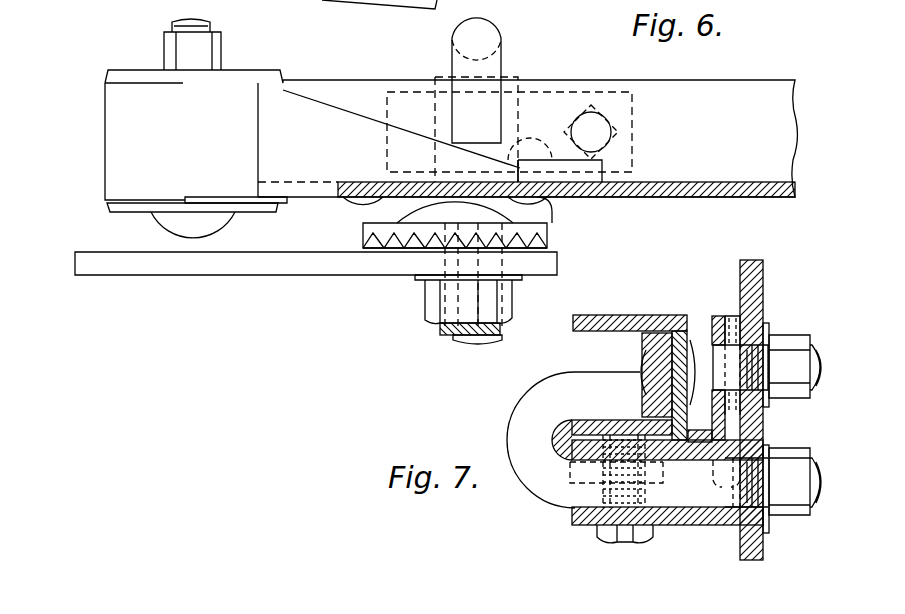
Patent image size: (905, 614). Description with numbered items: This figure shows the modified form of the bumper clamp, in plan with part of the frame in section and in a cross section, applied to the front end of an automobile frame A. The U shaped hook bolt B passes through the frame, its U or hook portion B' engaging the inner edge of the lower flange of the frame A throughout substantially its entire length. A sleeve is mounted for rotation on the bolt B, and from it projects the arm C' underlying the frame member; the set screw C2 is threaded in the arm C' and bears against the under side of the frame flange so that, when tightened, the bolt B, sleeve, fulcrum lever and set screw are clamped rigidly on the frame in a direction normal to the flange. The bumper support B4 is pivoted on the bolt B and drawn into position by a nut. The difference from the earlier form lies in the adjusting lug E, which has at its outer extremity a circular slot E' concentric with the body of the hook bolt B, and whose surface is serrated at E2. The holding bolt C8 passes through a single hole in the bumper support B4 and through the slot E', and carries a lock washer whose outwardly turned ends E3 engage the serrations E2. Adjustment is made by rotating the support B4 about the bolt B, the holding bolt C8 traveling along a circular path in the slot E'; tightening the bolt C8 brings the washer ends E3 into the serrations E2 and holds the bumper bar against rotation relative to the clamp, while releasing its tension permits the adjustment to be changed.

In FIG. 6, the front end of automobile frame A is at (795, 145).
In FIG. 7, the front end of automobile frame A is at (613, 315).
In FIG. 6, the U shaped hook bolt B is at (468, 331).
In FIG. 7, the U shaped hook bolt B is at (776, 428).
In FIG. 6, the U or hook portion B' is at (501, 80).
In FIG. 7, the U or hook portion B' is at (635, 448).
In FIG. 6, the bumper support B4 is at (257, 268).
In FIG. 7, the bumper support B4 is at (763, 278).
In FIG. 6, the arm C' is at (540, 132).
In FIG. 7, the arm C' is at (549, 510).
In FIG. 6, the set screw C2 is at (632, 115).
In FIG. 7, the set screw C2 is at (612, 533).
In FIG. 6, the holding bolt C8 is at (445, 327).
In FIG. 7, the holding bolt C8 is at (813, 345).
In FIG. 6, the adjusting lug E is at (481, 244).
In FIG. 7, the adjusting lug E is at (729, 330).
In FIG. 6, the circular slot E' is at (492, 216).
In FIG. 6, the serrations E2 is at (530, 237).
In FIG. 7, the serrations E2 is at (733, 316).
In FIG. 6, the outwardly turned ends of washer E3 is at (470, 240).
In FIG. 7, the outwardly turned ends of washer E3 is at (713, 332).